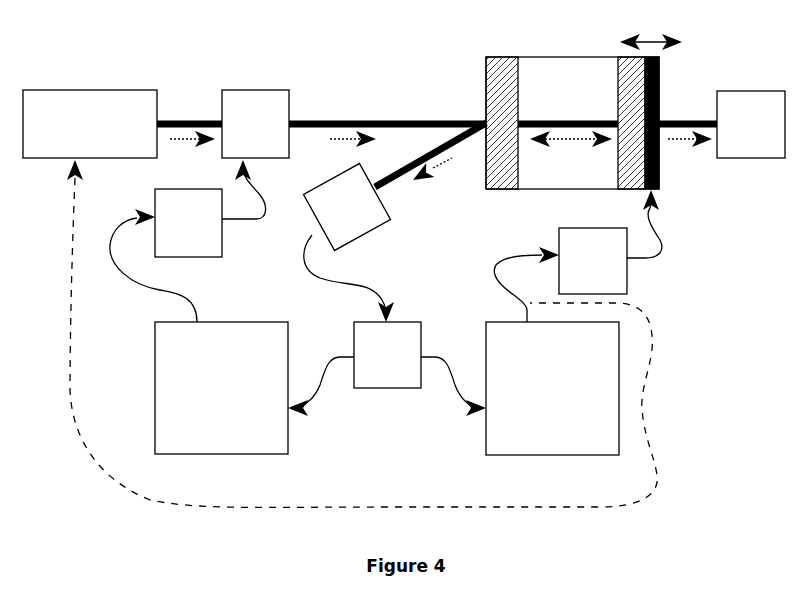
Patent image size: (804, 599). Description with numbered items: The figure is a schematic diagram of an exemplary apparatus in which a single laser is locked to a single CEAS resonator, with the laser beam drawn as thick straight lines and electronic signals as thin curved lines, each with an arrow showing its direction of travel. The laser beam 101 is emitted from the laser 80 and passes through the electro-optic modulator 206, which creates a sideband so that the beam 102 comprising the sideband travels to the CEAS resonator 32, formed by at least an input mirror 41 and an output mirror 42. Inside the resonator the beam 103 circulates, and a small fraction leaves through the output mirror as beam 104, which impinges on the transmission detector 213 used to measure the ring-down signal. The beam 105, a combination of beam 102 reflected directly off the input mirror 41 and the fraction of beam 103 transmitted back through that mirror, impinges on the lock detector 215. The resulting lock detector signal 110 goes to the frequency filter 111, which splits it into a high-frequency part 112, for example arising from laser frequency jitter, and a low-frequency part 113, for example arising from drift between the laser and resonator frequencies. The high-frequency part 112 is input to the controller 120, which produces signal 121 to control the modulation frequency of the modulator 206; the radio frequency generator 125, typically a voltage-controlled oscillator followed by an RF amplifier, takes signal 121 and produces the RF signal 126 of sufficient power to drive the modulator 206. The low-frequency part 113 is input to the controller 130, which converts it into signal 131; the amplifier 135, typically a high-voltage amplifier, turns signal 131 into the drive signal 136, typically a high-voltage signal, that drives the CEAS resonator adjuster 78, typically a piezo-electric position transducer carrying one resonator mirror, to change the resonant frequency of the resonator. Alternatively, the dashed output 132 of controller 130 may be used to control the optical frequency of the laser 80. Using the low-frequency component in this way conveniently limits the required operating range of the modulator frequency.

The laser 80 is at (100, 135).
The laser beam 101 is at (189, 122).
The electro-optic modulator 206 is at (272, 135).
The beam comprising the sideband 102 is at (387, 122).
The input mirror 41 is at (502, 123).
The CEAS resonator 32 is at (572, 123).
The circulating beam 103 is at (568, 122).
The output mirror 42 is at (631, 123).
The CEAS resonator adjuster 78 is at (654, 111).
The beam emitted through the output mirror 104 is at (688, 122).
The transmission detector 213 is at (751, 124).
The beam impinging on lock detector 105 is at (430, 155).
The lock detector 215 is at (346, 206).
The radio frequency generator 125 is at (188, 223).
The RF signal 126 is at (244, 201).
The control signal 121 is at (151, 265).
The lock detector signal 110 is at (349, 278).
The controller 120 is at (221, 388).
The frequency filter 111 is at (387, 355).
The high-frequency part 112 is at (321, 374).
The low-frequency part 113 is at (453, 375).
The controller 130 is at (552, 388).
The control signal 131 is at (518, 276).
The amplifier 135 is at (593, 261).
The drive signal 136 is at (658, 239).
The controller output 132 is at (362, 333).